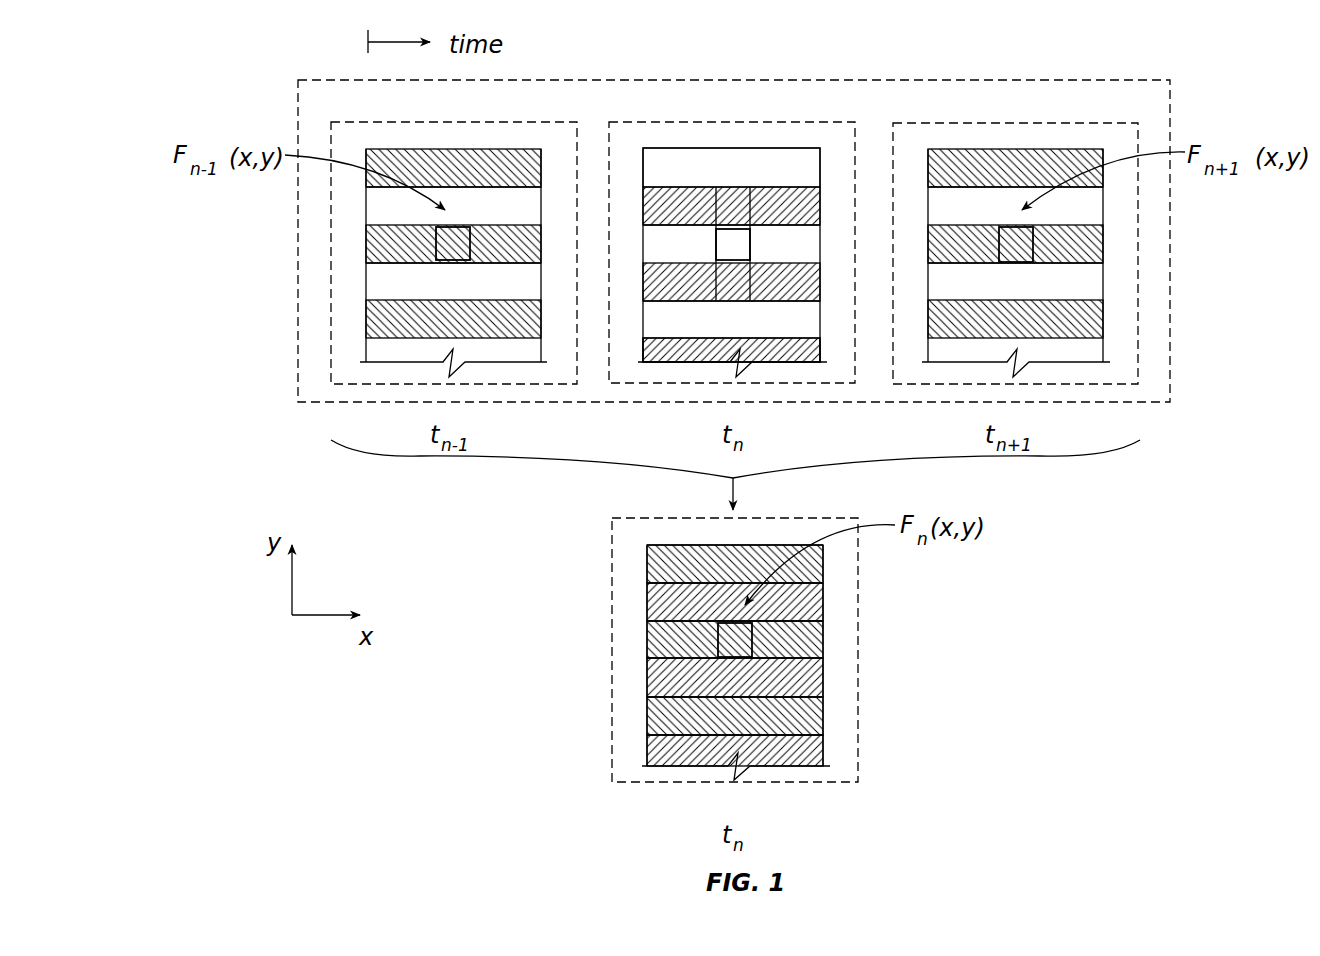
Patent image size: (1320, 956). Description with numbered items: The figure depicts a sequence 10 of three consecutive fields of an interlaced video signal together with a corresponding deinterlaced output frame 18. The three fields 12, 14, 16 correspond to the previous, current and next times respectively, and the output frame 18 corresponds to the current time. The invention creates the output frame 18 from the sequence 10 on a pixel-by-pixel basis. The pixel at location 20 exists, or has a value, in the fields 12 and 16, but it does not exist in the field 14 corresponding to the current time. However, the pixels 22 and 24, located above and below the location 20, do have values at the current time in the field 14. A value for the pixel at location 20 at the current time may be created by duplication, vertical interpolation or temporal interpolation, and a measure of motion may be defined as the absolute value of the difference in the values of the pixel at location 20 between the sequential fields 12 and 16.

The sequence 10 is at (995, 80).
The field 12 is at (357, 122).
The field 14 is at (812, 122).
The field 16 is at (1088, 122).
The output frame 18 is at (858, 660).
The pixel location 20 is at (420, 247).
The pixel 22 is at (731, 172).
The pixel 24 is at (738, 312).